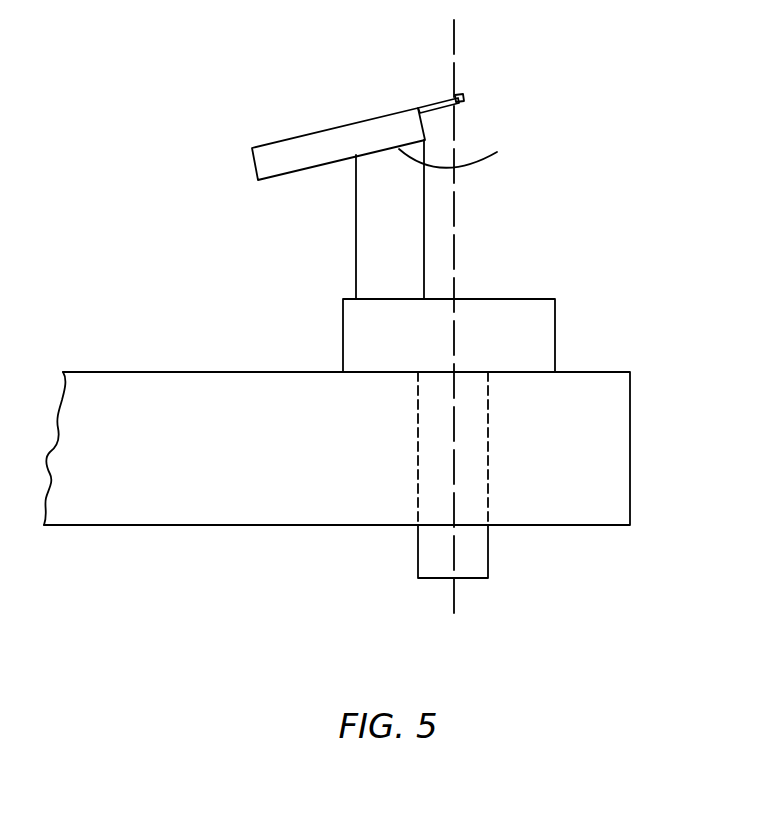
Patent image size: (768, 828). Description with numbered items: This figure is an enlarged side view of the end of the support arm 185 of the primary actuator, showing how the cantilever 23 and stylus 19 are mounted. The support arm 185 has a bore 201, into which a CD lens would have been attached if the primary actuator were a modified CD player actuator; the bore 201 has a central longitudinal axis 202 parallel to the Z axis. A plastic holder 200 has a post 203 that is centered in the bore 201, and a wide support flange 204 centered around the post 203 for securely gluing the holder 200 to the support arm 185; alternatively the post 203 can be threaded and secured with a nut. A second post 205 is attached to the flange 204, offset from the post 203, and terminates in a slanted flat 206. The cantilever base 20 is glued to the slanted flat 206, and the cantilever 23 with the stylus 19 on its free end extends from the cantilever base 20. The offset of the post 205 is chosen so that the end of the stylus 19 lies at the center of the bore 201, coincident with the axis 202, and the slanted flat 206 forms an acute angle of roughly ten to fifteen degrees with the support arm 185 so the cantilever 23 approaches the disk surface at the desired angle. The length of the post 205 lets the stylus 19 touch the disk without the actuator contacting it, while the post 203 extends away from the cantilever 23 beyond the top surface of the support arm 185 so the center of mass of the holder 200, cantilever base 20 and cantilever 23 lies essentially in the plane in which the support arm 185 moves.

The stylus 19 is at (458, 94).
The cantilever base 20 is at (320, 128).
The cantilever 23 is at (437, 100).
The support arm 185 is at (622, 443).
The plastic holder 200 is at (525, 298).
The bore 201 is at (488, 488).
The central longitudinal axis 202 is at (453, 588).
The post 203 is at (430, 552).
The support flange 204 is at (545, 338).
The second post 205 is at (424, 260).
The slanted flat 206 is at (467, 146).